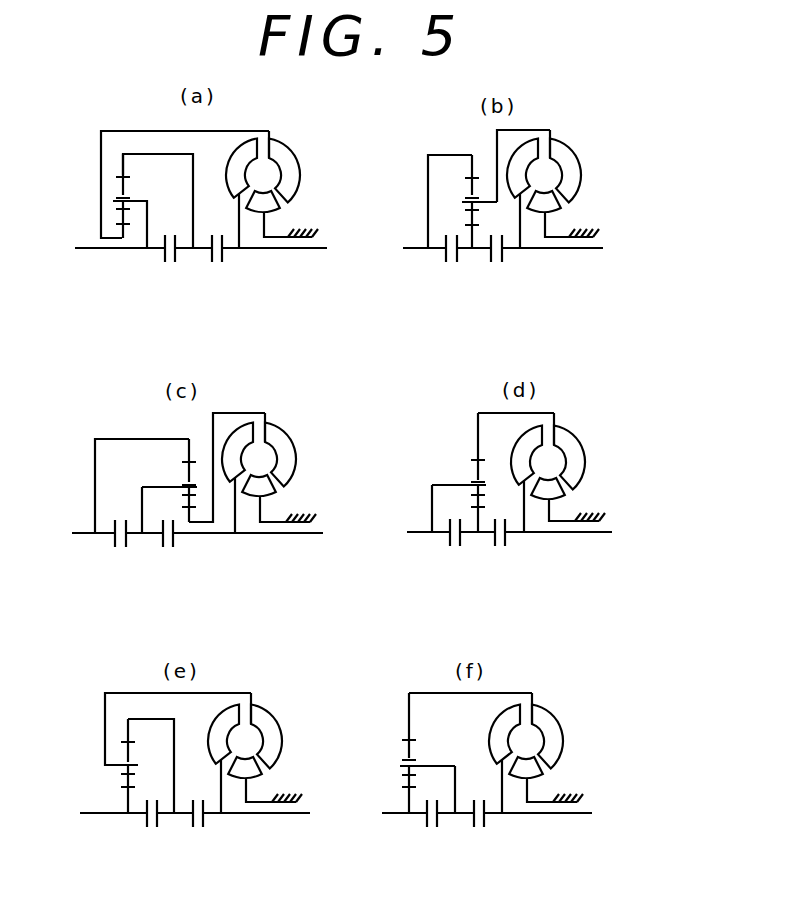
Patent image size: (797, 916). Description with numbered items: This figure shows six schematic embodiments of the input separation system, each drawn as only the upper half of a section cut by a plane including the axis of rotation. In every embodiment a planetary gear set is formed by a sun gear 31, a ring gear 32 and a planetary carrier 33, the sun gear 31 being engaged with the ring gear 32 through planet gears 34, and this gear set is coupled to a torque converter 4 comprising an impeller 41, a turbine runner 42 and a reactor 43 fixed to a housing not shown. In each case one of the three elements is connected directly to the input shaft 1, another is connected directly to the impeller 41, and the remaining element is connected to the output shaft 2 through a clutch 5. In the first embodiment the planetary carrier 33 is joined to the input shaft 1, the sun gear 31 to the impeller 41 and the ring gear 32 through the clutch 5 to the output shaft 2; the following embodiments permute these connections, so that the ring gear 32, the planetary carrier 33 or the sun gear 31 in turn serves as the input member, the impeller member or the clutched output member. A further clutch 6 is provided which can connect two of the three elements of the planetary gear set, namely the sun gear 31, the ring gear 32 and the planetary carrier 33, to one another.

The input shaft 1 is at (83, 248).
The output shaft 2 is at (293, 250).
The sun gear 31 is at (120, 238).
The ring gear 32 is at (117, 176).
The planetary carrier 33 is at (142, 236).
The planet gears 34 is at (118, 213).
The torque converter 4 is at (416, 457).
The impeller 41 is at (281, 146).
The turbine runner 42 is at (254, 157).
The reactor 43 is at (274, 212).
The clutch 5 is at (226, 257).
The clutch 6 is at (178, 257).